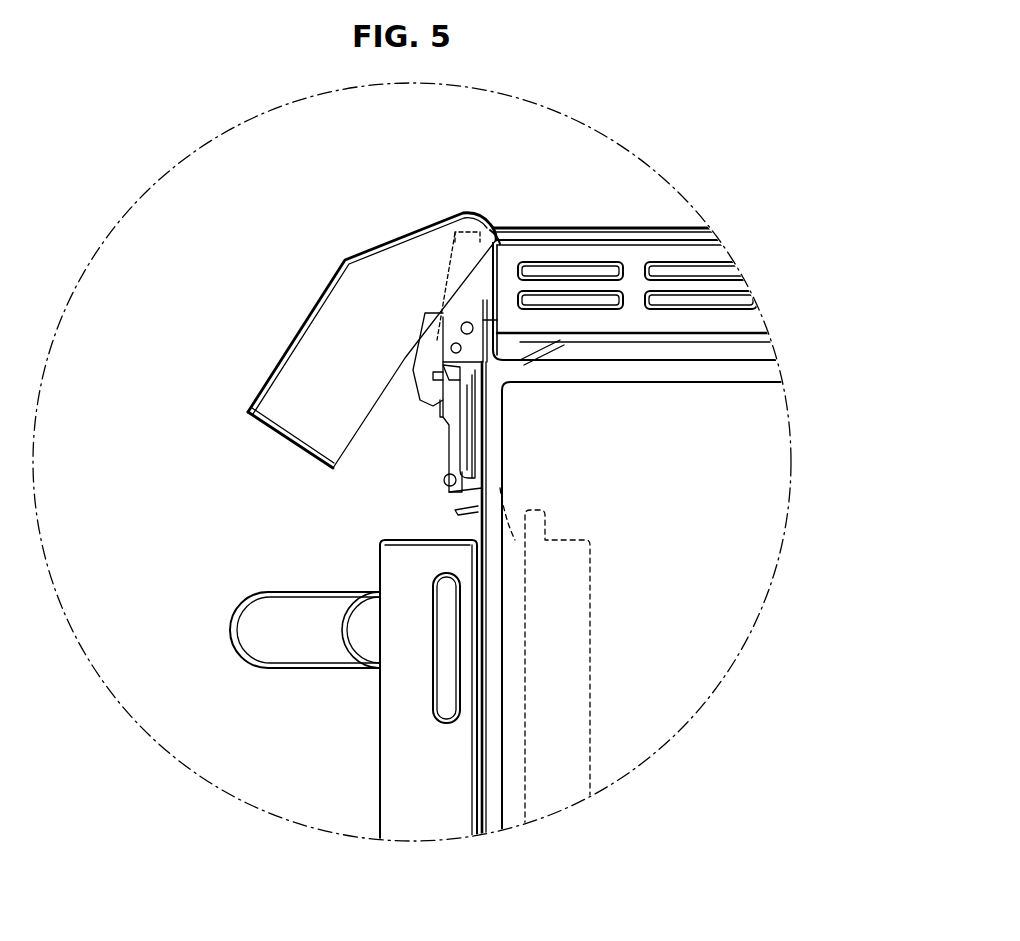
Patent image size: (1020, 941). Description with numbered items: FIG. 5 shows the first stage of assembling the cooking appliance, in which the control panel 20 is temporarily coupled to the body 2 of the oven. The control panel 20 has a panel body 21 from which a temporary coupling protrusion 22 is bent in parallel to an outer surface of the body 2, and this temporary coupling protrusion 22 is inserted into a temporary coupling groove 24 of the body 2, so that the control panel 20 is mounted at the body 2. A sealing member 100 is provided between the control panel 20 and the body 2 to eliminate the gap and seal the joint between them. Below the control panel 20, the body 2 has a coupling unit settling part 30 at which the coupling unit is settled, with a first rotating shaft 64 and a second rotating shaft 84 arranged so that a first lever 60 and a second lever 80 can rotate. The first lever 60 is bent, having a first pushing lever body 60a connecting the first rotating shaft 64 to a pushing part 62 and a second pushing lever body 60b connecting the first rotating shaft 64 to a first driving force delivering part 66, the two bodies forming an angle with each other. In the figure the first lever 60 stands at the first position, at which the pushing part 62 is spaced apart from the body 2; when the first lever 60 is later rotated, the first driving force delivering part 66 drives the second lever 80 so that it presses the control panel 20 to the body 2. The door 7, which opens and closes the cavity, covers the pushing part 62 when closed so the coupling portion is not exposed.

The body 2 is at (507, 262).
The door 7 is at (371, 733).
The control panel 20 is at (403, 229).
The panel body 21 is at (362, 253).
The temporary coupling protrusion 22 is at (494, 237).
The temporary coupling groove 24 is at (478, 223).
The coupling unit settling part 30 is at (482, 343).
The first lever 60 is at (436, 429).
The first pushing lever body 60a is at (480, 486).
The second pushing lever body 60b is at (452, 438).
The pushing part 62 is at (527, 542).
The first rotating shaft 64 is at (446, 488).
The first driving force delivering part 66 is at (470, 398).
The second lever 80 is at (410, 371).
The second rotating shaft 84 is at (448, 327).
The sealing member 100 is at (498, 242).